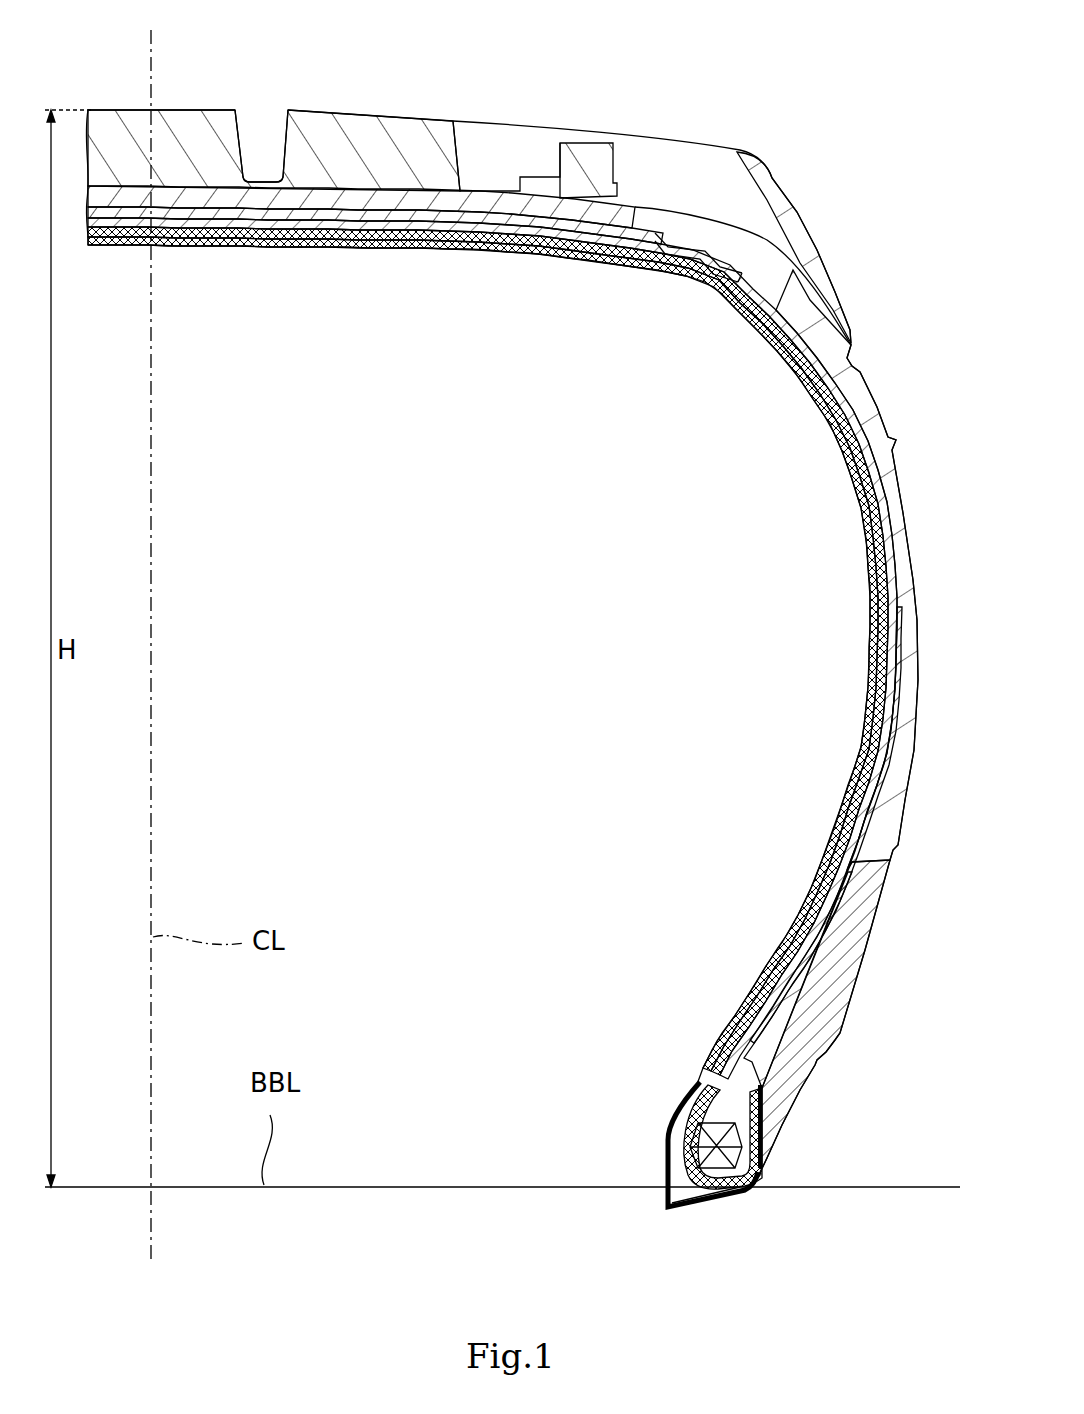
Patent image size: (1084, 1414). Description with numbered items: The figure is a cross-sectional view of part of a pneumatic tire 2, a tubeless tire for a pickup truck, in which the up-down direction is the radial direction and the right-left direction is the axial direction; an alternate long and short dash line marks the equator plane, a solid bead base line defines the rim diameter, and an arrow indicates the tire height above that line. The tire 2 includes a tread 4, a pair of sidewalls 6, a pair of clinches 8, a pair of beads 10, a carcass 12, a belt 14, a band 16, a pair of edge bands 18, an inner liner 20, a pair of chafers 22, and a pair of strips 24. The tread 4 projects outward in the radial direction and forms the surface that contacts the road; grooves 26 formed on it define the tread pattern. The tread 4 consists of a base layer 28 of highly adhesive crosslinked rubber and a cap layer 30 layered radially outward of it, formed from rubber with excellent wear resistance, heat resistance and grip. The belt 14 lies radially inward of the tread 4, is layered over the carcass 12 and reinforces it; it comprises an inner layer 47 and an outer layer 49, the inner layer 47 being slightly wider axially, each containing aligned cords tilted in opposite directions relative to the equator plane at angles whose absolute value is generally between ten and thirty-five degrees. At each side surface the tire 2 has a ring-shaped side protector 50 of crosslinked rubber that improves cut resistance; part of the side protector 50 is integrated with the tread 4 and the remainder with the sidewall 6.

The pneumatic tire 2 is at (894, 80).
The tread 4 is at (352, 99).
The sidewall 6 is at (890, 558).
The clinch 8 is at (810, 1047).
The bead 10 is at (683, 1100).
The carcass 12 is at (842, 394).
The belt 14 is at (488, 651).
The band 16 is at (420, 192).
The edge band 18 is at (653, 200).
The inner liner 20 is at (462, 256).
The chafer 22 is at (700, 1207).
The strip 24 is at (797, 943).
The groove 26 is at (266, 125).
The base layer 28 is at (320, 186).
The cap layer 30 is at (190, 130).
The inner layer 47 is at (383, 338).
The outer layer 49 is at (362, 252).
The side protector 50 is at (828, 308).